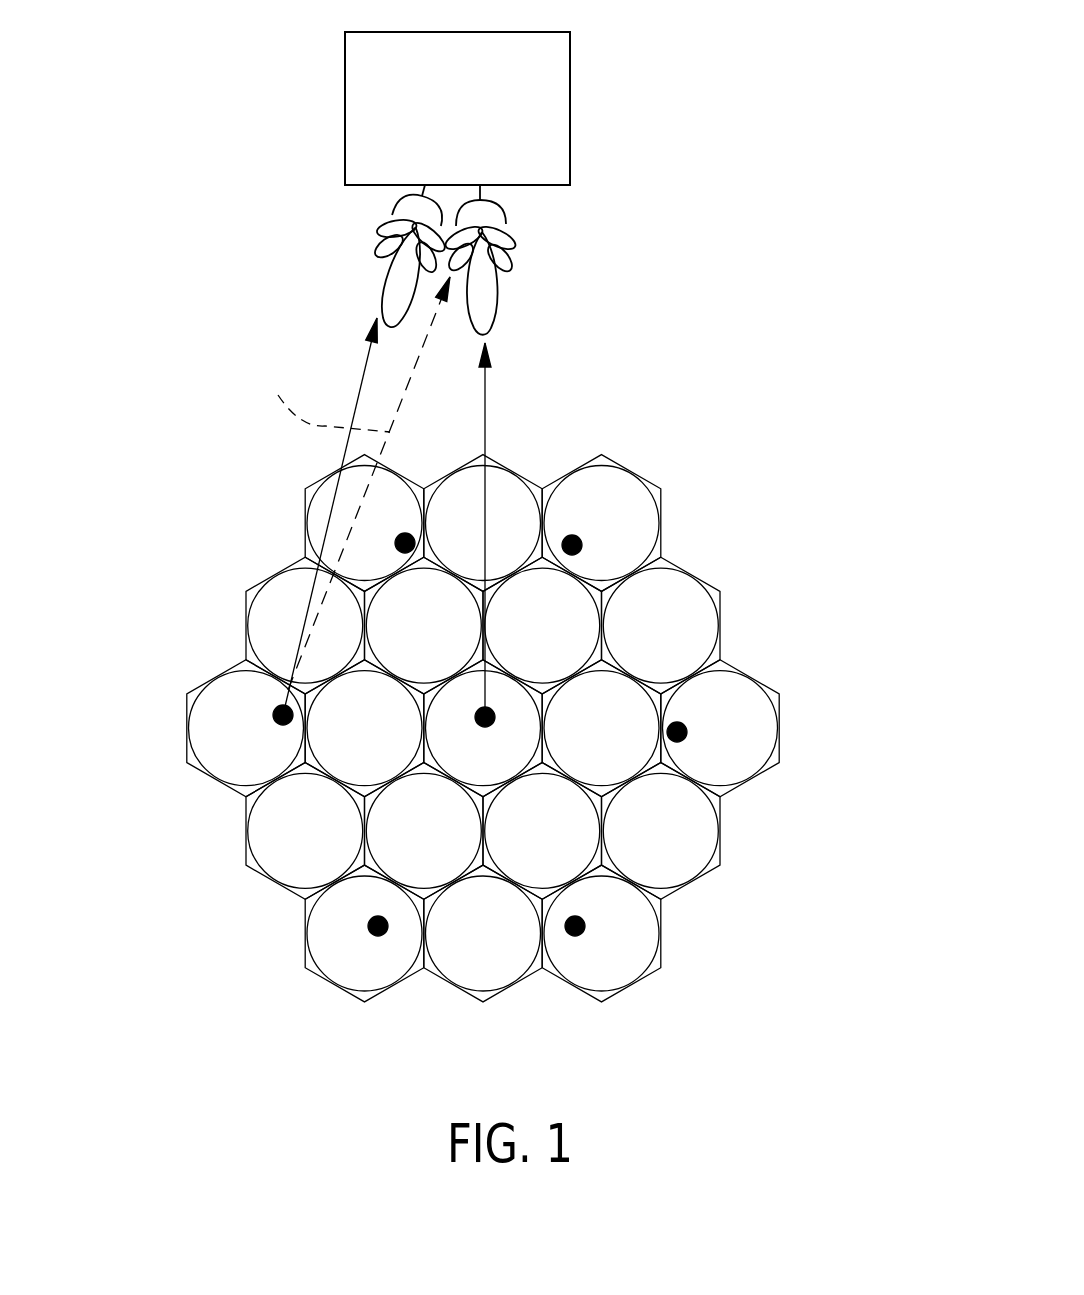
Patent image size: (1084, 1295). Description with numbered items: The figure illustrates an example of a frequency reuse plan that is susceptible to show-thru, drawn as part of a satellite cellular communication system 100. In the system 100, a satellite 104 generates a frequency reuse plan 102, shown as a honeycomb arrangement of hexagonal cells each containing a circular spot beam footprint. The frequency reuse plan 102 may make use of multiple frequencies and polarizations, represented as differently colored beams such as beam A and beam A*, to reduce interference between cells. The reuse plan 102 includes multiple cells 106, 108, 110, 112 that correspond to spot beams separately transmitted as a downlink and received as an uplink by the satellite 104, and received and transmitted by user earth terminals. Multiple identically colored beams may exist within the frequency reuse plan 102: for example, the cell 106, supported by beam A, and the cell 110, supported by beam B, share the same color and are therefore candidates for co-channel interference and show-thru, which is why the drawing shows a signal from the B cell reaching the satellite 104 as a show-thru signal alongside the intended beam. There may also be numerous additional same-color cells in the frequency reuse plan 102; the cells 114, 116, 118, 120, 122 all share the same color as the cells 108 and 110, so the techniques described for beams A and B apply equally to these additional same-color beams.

The satellite cellular communication system 100 is at (805, 830).
The frequency reuse plan 102 is at (700, 560).
The satellite 104 is at (572, 95).
The cell 106 is at (488, 782).
The cell 108 is at (358, 783).
The cell 110 is at (475, 630).
The cell 112 is at (267, 625).
The cell 114 is at (333, 982).
The cell 116 is at (590, 992).
The cell 118 is at (782, 729).
The cell 120 is at (572, 467).
The cell 122 is at (322, 518).